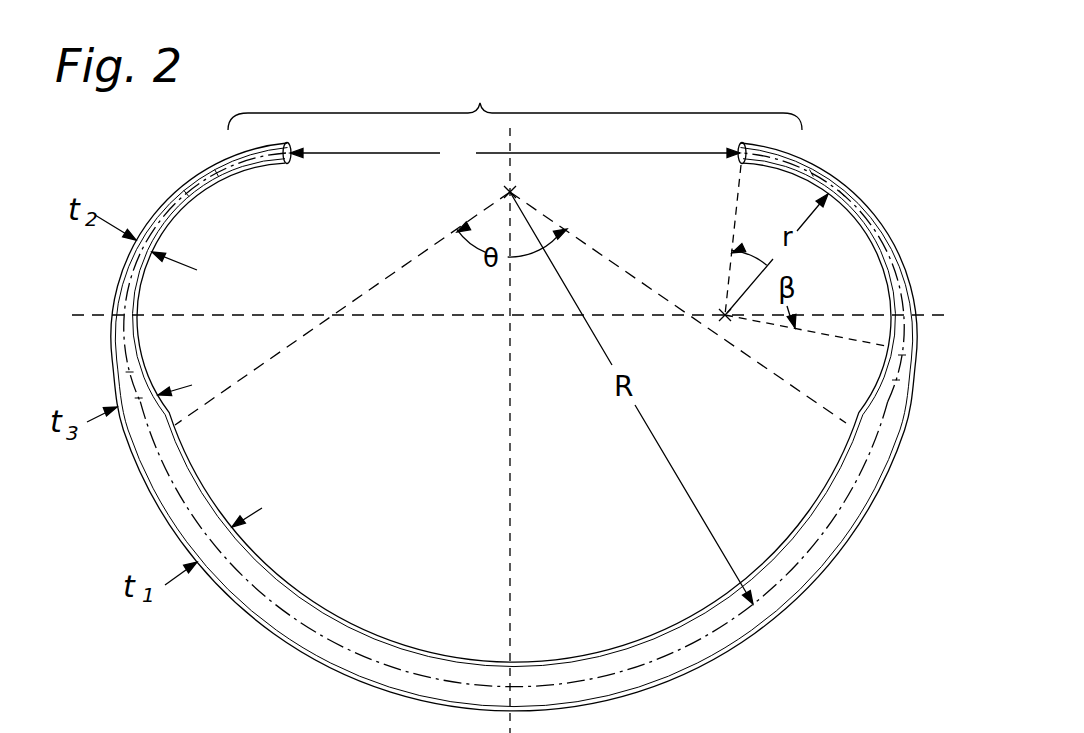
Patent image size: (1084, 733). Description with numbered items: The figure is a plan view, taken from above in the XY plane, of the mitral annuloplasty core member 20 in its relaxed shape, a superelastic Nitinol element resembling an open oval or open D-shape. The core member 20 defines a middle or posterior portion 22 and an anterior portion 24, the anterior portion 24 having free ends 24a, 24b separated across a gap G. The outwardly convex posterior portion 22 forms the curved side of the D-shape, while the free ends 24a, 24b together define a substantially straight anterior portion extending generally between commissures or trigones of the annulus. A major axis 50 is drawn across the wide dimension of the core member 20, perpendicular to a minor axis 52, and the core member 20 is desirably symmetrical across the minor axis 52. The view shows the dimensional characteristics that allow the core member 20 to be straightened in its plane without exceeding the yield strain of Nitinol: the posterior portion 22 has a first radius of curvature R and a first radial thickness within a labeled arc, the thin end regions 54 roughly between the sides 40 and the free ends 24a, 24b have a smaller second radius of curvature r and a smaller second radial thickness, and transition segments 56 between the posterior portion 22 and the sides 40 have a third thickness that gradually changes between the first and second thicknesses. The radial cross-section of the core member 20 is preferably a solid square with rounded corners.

The mitral annuloplasty core member 20 is at (165, 166).
The posterior portion 22 is at (382, 638).
The anterior portion 24 is at (478, 103).
The free end 24a is at (262, 168).
The free end 24b is at (772, 175).
The sides 40 is at (113, 367).
The major axis 50 is at (392, 318).
The minor axis 52 is at (508, 385).
The thin end regions 54 is at (892, 240).
The transition segments 56 is at (911, 397).